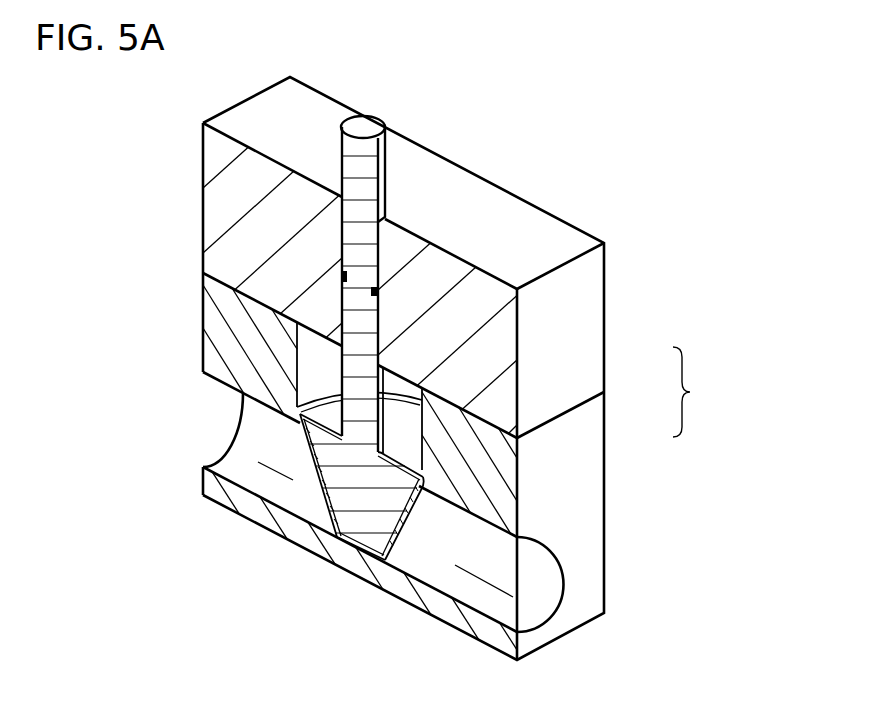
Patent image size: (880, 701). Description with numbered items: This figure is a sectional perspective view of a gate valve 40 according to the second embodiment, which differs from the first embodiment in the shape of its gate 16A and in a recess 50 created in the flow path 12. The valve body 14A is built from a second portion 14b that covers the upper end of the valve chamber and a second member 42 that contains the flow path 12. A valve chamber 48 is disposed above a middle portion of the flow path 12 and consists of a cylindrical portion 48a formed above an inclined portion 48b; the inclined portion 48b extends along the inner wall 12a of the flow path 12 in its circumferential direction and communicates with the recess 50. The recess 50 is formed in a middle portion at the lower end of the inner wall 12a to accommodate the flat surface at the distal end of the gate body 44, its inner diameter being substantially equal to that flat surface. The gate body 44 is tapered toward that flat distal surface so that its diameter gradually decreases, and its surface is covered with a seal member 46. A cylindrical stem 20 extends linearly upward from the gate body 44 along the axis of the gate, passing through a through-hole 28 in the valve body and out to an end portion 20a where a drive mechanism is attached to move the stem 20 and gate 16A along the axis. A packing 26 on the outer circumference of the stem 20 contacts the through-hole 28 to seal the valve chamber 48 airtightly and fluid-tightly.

The gate valve 40 is at (540, 104).
The valve body 14A is at (703, 392).
The second portion 14b is at (590, 356).
The second member 42 is at (587, 429).
The flow path 12 is at (545, 566).
The inner wall 12a is at (540, 553).
The gate 16A is at (302, 449).
The stem 20 is at (352, 150).
The end portion 20a is at (370, 127).
The packing 26 is at (378, 292).
The through-hole 28 is at (350, 232).
The valve chamber 48 is at (393, 385).
The cylindrical portion 48a is at (310, 352).
The inclined portion 48b is at (305, 383).
The gate body 44 is at (322, 483).
The seal member 46 is at (330, 523).
The recess 50 is at (385, 546).